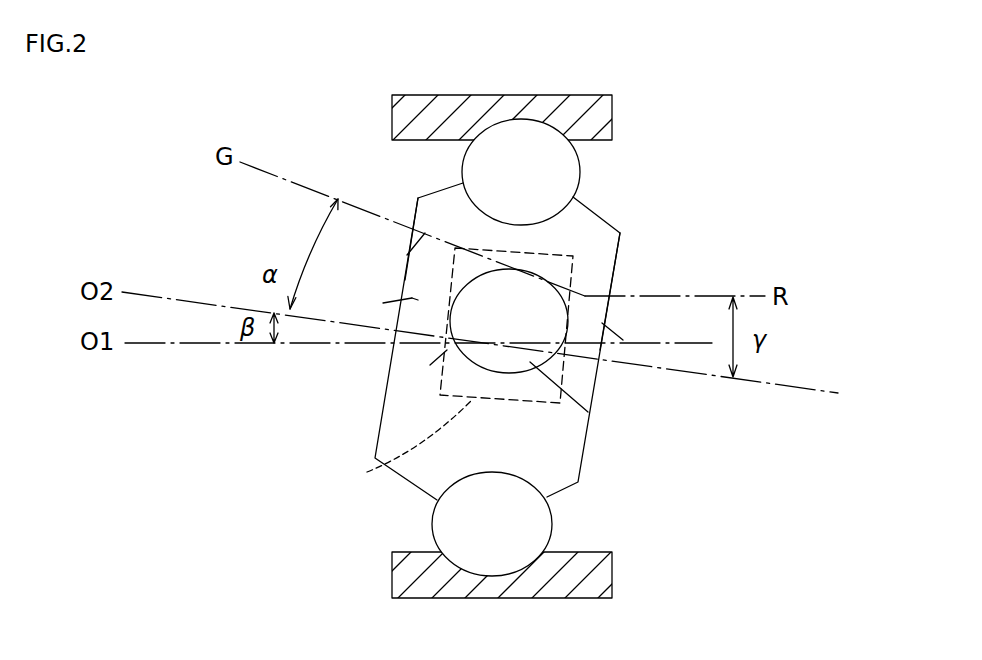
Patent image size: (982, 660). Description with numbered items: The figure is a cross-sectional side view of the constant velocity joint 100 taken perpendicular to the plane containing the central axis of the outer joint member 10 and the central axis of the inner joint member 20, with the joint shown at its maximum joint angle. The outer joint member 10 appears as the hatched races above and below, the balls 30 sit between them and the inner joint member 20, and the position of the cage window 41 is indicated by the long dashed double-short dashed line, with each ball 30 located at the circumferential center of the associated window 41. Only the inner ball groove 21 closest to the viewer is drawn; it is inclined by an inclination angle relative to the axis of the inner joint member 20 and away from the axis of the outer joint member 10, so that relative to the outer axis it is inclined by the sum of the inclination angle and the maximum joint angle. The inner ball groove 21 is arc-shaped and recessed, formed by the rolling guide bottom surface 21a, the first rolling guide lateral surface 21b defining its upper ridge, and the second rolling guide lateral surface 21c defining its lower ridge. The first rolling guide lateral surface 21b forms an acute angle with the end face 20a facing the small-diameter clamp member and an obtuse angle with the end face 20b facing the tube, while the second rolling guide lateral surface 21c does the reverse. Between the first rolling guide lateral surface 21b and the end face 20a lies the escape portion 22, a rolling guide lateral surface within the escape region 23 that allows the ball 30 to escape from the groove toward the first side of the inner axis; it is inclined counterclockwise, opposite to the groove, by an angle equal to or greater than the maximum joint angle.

The outer joint member 10 is at (440, 112).
The inner joint member 20 is at (565, 477).
The end face 20a is at (618, 268).
The end face 20b is at (414, 219).
The inner ball groove 21 is at (218, 365).
The rolling guide bottom surface 21a is at (412, 298).
The first rolling guide lateral surface 21b is at (425, 233).
The second rolling guide lateral surface 21c is at (447, 350).
The escape portion 22 is at (590, 298).
The escape region 23 is at (623, 340).
The ball 30 is at (580, 170).
The window 41 is at (365, 472).
The constant velocity joint 100 is at (778, 125).